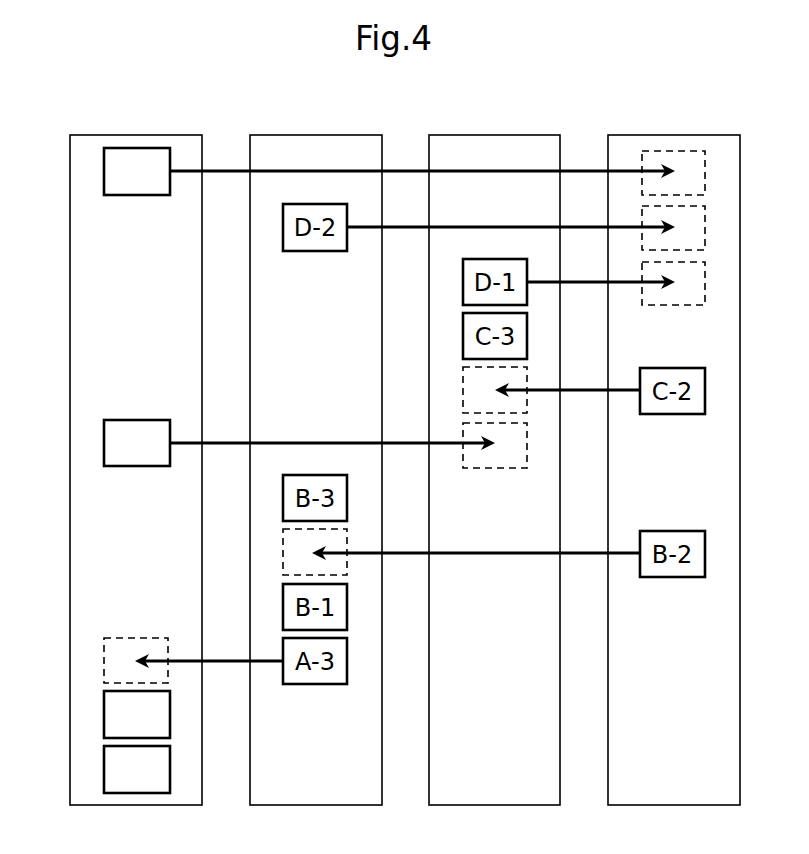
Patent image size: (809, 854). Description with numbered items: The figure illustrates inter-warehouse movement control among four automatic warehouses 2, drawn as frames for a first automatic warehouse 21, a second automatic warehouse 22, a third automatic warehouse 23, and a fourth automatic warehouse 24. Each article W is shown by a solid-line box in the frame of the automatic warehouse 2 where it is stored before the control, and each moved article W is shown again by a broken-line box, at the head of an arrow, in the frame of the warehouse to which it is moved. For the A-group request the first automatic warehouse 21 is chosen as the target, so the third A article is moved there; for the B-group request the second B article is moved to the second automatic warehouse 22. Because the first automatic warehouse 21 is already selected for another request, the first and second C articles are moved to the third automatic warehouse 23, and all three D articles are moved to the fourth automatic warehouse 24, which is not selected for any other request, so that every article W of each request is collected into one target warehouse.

The automatic warehouse 2 is at (409, 440).
The first automatic warehouse 21 is at (138, 135).
The second automatic warehouse 22 is at (314, 135).
The third automatic warehouse 23 is at (495, 135).
The fourth automatic warehouse 24 is at (672, 135).
The article W is at (104, 171).